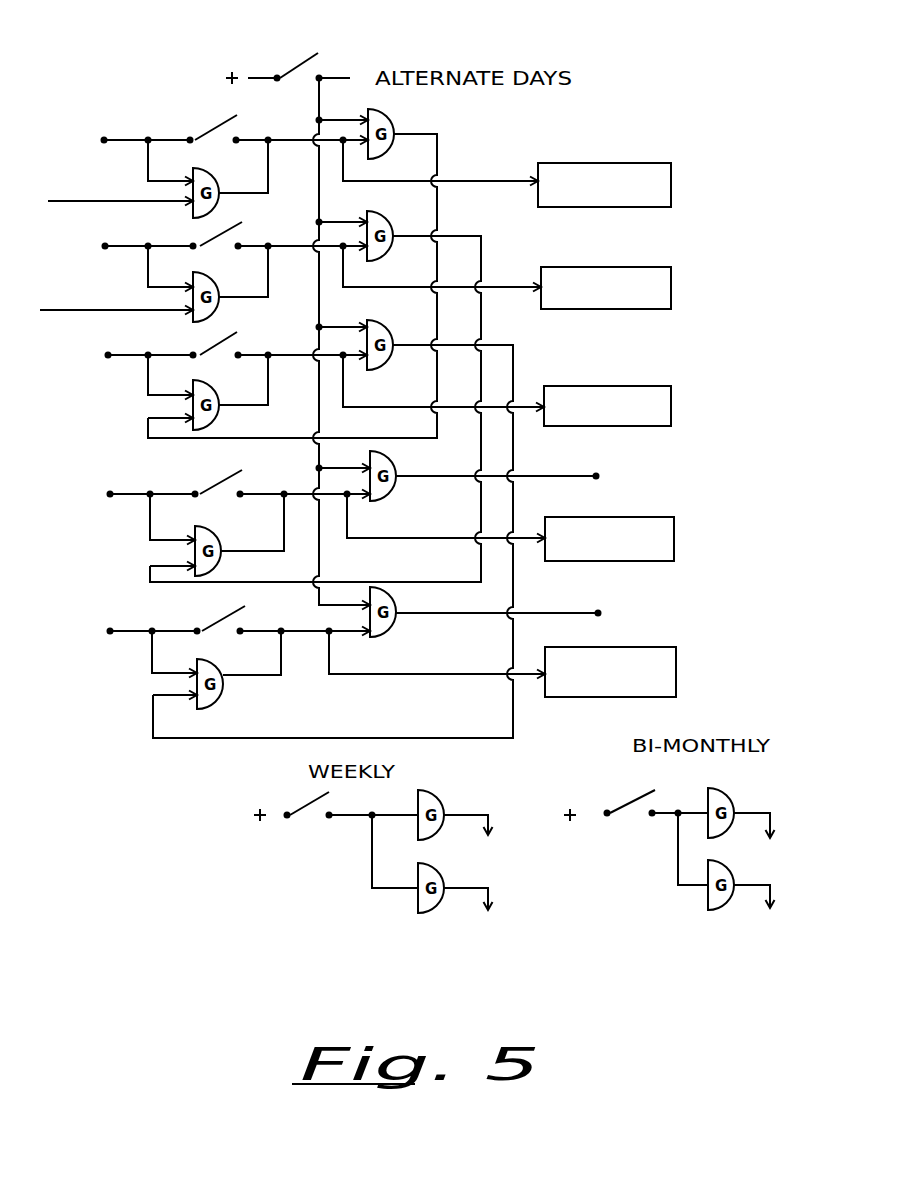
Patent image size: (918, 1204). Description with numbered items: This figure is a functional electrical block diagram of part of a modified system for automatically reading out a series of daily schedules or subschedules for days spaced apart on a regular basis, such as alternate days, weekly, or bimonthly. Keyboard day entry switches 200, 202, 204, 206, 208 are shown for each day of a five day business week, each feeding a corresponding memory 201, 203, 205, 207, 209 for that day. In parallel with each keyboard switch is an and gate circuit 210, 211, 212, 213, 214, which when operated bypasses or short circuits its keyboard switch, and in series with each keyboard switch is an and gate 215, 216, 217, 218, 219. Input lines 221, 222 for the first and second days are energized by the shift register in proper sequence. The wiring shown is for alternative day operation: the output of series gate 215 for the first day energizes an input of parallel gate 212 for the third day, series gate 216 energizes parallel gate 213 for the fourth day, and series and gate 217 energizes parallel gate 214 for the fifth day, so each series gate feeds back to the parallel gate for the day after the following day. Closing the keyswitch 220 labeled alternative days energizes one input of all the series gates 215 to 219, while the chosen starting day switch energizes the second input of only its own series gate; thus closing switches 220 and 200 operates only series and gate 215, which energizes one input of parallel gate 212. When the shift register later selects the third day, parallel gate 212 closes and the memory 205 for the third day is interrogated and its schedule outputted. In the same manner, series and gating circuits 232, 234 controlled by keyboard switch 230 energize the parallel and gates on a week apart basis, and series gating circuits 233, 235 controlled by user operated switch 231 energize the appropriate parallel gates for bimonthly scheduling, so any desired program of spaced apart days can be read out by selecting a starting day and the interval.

The keyboard day entry switch 200 is at (207, 132).
The first day memory 201 is at (669, 182).
The keyboard day entry switch 202 is at (214, 238).
The second day memory 203 is at (671, 290).
The keyboard day entry switch 204 is at (217, 348).
The third day memory 205 is at (667, 397).
The keyboard day entry switch 206 is at (225, 481).
The fourth day memory 207 is at (665, 530).
The keyboard day entry switch 208 is at (222, 618).
The fifth day memory 209 is at (668, 662).
The parallel and gate circuit 210 is at (207, 178).
The parallel and gate circuit 211 is at (205, 277).
The parallel and gate circuit 212 is at (192, 385).
The parallel and gate circuit 213 is at (207, 535).
The parallel and gate circuit 214 is at (217, 705).
The series and gate 215 is at (392, 120).
The series and gate 216 is at (400, 210).
The series and gate 217 is at (383, 329).
The series and gate 218 is at (385, 463).
The series and gate 219 is at (385, 592).
The alternative days keyswitch 220 is at (302, 63).
The input line 221 is at (125, 140).
The input line 222 is at (133, 245).
The keyboard operated switch 230 is at (310, 803).
The keyboard switch 231 is at (635, 800).
The series and gating circuit 232 is at (432, 797).
The series gating circuit 233 is at (722, 797).
The series and gating circuit 234 is at (428, 912).
The series gating circuit 235 is at (713, 897).